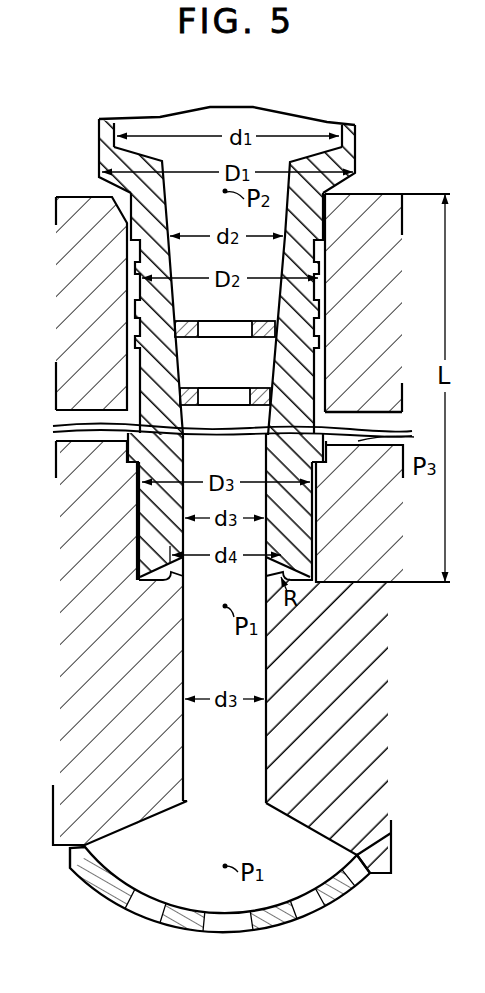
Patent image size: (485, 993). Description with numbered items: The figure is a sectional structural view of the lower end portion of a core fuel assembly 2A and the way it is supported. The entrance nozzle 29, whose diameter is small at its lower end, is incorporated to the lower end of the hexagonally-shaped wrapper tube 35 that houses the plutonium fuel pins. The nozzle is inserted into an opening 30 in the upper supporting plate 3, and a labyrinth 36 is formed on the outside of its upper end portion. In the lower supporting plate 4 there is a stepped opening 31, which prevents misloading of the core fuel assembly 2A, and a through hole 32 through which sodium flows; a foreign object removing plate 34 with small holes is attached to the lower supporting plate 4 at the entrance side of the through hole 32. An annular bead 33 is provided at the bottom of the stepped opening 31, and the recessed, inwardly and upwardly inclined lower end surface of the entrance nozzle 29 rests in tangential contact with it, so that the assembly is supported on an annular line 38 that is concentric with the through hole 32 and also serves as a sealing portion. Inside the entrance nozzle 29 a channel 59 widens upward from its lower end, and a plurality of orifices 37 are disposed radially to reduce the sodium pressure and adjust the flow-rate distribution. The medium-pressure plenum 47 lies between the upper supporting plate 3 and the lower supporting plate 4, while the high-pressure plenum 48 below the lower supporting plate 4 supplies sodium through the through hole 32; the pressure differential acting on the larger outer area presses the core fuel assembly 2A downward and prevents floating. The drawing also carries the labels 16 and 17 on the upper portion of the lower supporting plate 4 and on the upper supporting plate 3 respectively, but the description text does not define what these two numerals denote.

The core fuel assembly 2A is at (99, 131).
The upper supporting plate 3 is at (76, 309).
The lower supporting plate 4 is at (96, 666).
The lower housing portion 16 is at (316, 477).
The upper housing portion 17 is at (387, 291).
The entrance nozzle 29 is at (150, 531).
The opening 30 is at (110, 336).
The stepped opening 31 is at (316, 535).
The through hole 32 is at (268, 770).
The annular bead 33 is at (170, 574).
The foreign object removing plate 34 is at (350, 880).
The wrapper tube 35 is at (356, 136).
The labyrinth 36 is at (322, 316).
The orifices 37 is at (277, 334).
The annular line 38 is at (311, 559).
The medium-pressure plenum 47 is at (385, 419).
The high-pressure plenum 48 is at (330, 981).
The channel 59 is at (202, 452).